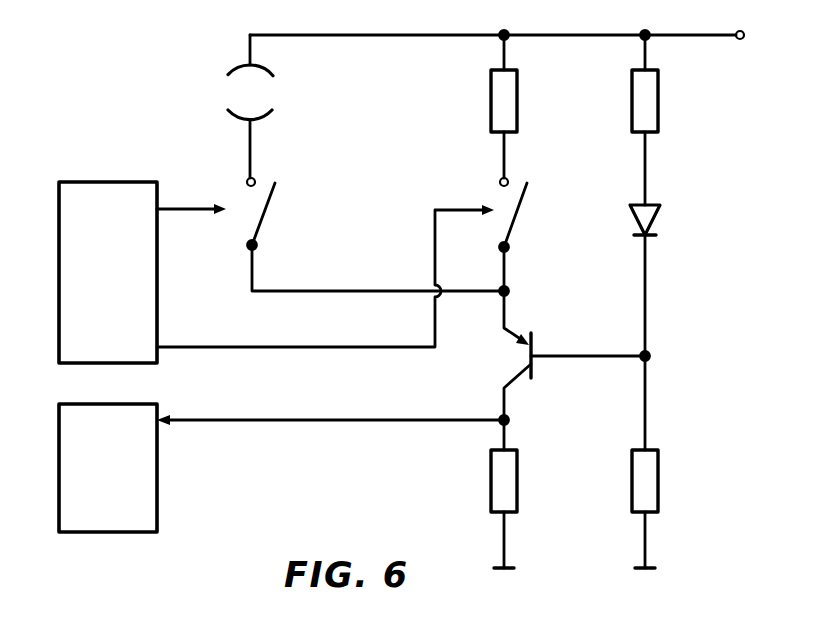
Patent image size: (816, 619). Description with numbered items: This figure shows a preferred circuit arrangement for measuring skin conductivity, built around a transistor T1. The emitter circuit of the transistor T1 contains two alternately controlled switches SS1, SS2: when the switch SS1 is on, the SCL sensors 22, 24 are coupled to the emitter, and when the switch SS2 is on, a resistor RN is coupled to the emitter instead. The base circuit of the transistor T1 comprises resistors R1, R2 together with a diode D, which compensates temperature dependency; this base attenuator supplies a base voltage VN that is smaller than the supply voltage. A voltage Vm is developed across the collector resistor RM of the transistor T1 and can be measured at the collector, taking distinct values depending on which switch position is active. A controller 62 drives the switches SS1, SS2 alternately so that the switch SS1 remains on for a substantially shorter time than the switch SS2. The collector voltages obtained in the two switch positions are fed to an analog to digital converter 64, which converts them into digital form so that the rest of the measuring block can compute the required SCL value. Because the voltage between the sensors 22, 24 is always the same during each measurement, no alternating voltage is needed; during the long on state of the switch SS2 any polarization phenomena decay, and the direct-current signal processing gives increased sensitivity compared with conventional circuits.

The SCL sensor 22 is at (241, 71).
The SCL sensor 24 is at (229, 110).
The switch SS1 is at (256, 180).
The switch SS2 is at (508, 180).
The controller 62 is at (59, 296).
The analog to digital converter 64 is at (59, 512).
The resistor RN is at (517, 86).
The resistor R1 is at (659, 105).
The resistor R2 is at (659, 490).
The collector resistor RM is at (491, 489).
The diode D is at (660, 213).
The transistor T1 is at (536, 346).
The base voltage VN is at (650, 357).
The measured voltage Vm is at (509, 421).